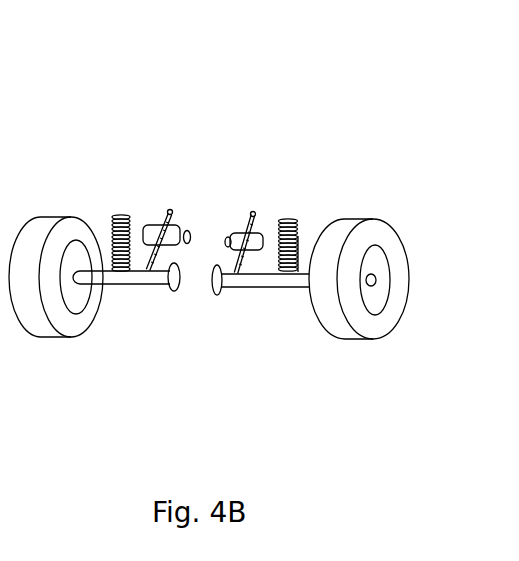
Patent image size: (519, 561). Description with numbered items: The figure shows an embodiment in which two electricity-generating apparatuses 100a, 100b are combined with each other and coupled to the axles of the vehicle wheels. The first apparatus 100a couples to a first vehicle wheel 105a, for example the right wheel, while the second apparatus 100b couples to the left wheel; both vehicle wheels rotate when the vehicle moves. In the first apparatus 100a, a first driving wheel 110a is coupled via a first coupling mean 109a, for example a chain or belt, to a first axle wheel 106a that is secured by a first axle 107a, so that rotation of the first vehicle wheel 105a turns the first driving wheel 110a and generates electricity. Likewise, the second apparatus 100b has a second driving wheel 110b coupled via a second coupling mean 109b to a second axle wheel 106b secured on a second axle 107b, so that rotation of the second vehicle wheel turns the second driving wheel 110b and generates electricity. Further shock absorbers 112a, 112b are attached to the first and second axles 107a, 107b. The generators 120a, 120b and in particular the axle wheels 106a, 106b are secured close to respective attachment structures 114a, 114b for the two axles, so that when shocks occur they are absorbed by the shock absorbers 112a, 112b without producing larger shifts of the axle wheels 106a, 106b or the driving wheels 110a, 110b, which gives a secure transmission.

The first apparatus 100a is at (310, 102).
The second apparatus 100b is at (100, 123).
The first vehicle wheel 105a is at (392, 244).
The first axle wheel 106a is at (218, 295).
The second axle wheel 106b is at (174, 292).
The first axle 107a is at (252, 287).
The second axle 107b is at (121, 278).
The first coupling mean 109a is at (216, 264).
The second coupling mean 109b is at (190, 257).
The first driving wheel 110a is at (223, 262).
The second driving wheel 110b is at (181, 213).
The further shock absorber 112a is at (300, 236).
The further shock absorber 112b is at (110, 256).
The attachment structure 114a is at (263, 217).
The attachment structure 114b is at (156, 226).
The generator 120a is at (262, 237).
The generator 120b is at (153, 229).